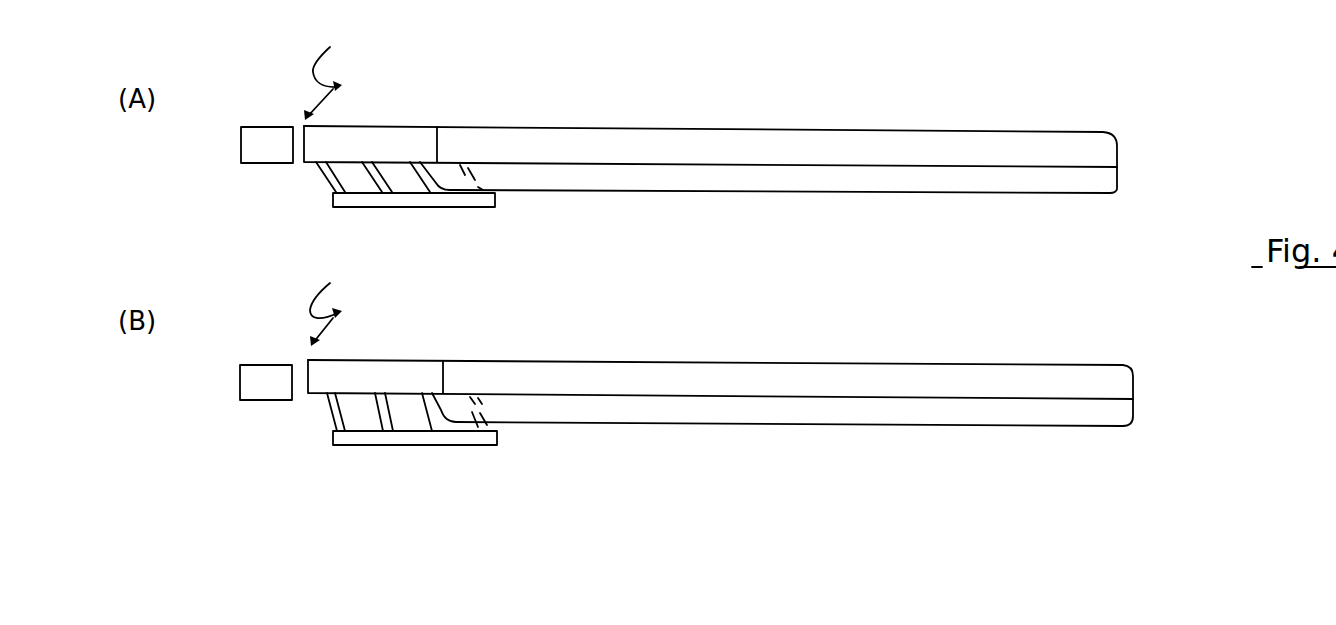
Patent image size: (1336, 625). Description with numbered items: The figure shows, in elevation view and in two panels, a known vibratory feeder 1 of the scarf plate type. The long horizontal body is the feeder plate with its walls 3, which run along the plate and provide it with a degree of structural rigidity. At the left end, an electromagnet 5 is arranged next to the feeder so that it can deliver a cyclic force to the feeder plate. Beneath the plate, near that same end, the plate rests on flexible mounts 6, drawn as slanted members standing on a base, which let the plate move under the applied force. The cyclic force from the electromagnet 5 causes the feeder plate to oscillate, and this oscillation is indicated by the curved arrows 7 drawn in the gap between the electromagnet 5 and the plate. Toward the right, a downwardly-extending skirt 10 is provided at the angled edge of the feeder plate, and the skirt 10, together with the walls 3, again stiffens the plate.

The feeder 1 is at (735, 265).
The walls 3 is at (368, 140).
The electromagnet 5 is at (258, 142).
The flexible mounts 6 is at (315, 173).
The curved arrows 7 is at (326, 183).
The skirt 10 is at (1096, 185).